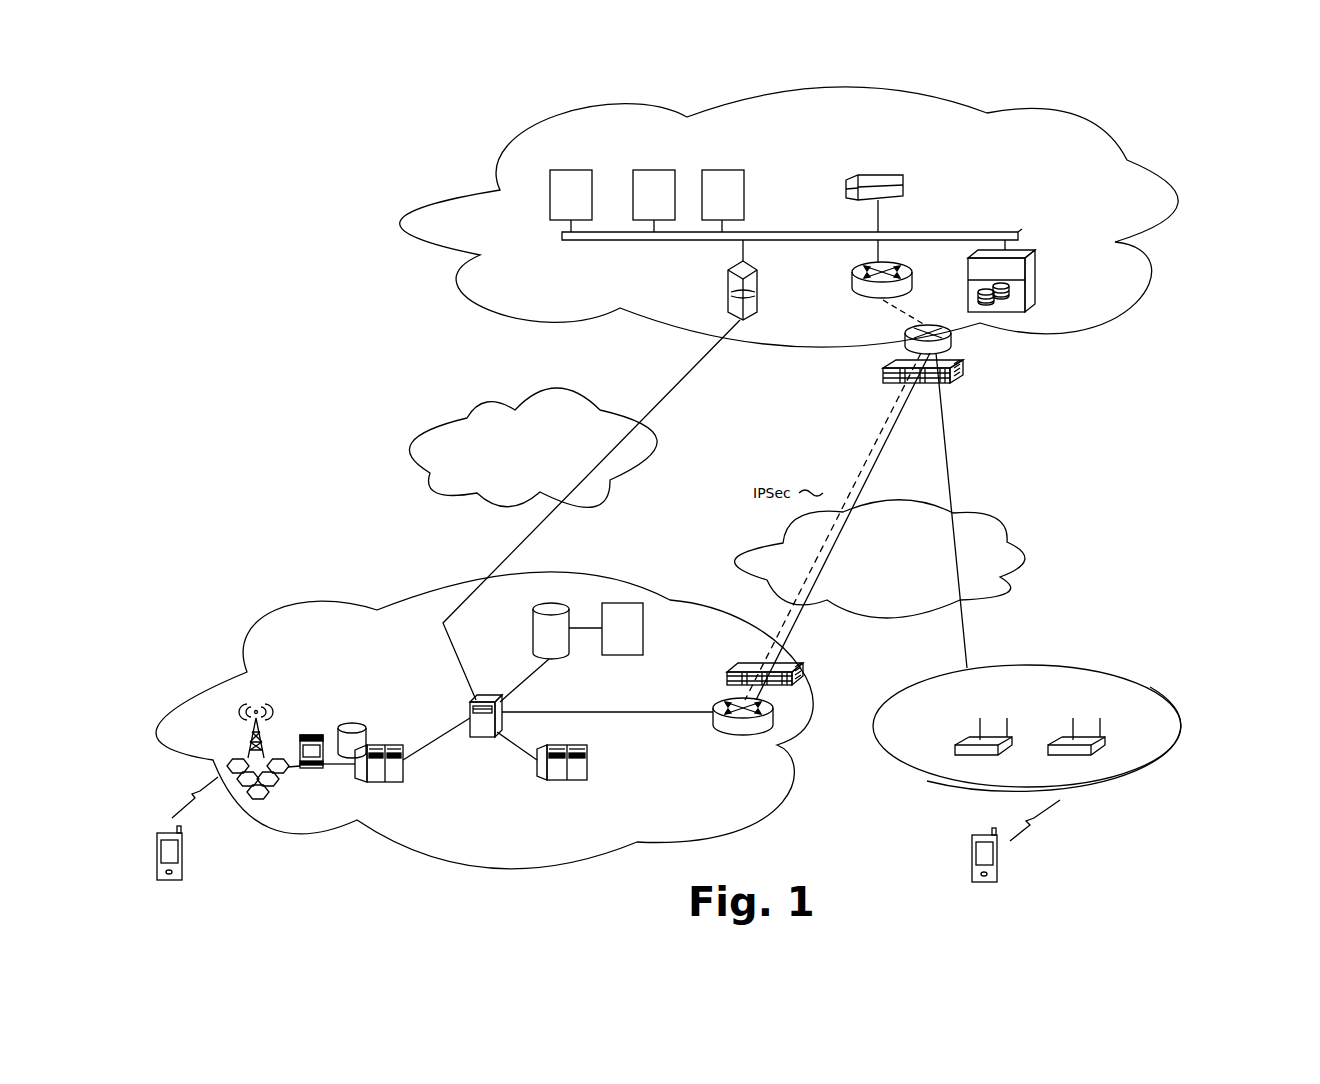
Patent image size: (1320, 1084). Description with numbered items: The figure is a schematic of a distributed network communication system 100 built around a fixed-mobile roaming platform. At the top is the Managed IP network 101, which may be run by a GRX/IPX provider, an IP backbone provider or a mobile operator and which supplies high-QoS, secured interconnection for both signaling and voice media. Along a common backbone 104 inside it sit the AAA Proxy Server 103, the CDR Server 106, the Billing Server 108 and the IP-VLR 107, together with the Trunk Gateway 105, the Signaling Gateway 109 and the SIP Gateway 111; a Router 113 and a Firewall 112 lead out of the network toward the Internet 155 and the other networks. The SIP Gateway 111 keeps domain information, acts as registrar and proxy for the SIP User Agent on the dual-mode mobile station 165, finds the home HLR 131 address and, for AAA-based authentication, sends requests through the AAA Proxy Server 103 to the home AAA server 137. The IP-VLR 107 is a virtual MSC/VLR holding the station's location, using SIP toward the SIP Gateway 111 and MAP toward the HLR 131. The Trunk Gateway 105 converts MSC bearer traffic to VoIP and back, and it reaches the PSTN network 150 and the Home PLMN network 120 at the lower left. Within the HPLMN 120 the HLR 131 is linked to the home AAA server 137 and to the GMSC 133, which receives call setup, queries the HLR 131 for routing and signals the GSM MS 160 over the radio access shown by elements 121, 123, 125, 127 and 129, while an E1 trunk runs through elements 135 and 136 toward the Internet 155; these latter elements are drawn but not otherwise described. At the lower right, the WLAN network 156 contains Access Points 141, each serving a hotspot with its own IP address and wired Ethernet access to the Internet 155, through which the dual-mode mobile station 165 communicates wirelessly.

The communication system 100 is at (1221, 135).
The Managed IP network 101 is at (1083, 113).
The AAA Proxy Server 103 is at (558, 204).
The local area network bus 104 is at (605, 240).
The Trunk Gateway 105 is at (758, 280).
The CDR Server 106 is at (641, 204).
The IP-VLR 107 is at (848, 184).
The Billing Server 108 is at (710, 204).
The Signaling Gateway 109 is at (912, 265).
The SIP Gateway 111 is at (1036, 278).
The Firewall 112 is at (964, 372).
The Router 113 is at (951, 338).
The Home PLMN network 120 is at (522, 866).
The base station and cells 121 is at (274, 797).
The base station controller 123 is at (308, 732).
The database 125 is at (351, 726).
The mobile switching center 127 is at (395, 783).
The server 129 is at (588, 760).
The home HLR 131 is at (533, 632).
The GMSC 133 is at (483, 738).
The router 135 is at (740, 735).
The switch 136 is at (803, 667).
The home AAA server 137 is at (643, 629).
The Access Point 141 is at (1097, 752).
The PSTN network 150 is at (438, 417).
The Internet 155 is at (993, 513).
The WLAN network 156 is at (1201, 736).
The GSM MS 160 is at (170, 881).
The dual-mode mobile station 165 is at (985, 883).